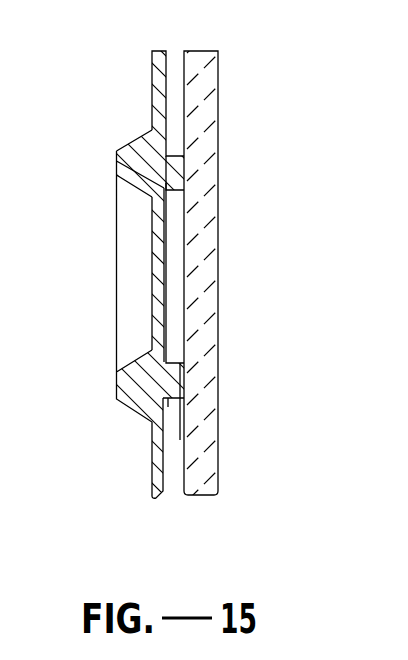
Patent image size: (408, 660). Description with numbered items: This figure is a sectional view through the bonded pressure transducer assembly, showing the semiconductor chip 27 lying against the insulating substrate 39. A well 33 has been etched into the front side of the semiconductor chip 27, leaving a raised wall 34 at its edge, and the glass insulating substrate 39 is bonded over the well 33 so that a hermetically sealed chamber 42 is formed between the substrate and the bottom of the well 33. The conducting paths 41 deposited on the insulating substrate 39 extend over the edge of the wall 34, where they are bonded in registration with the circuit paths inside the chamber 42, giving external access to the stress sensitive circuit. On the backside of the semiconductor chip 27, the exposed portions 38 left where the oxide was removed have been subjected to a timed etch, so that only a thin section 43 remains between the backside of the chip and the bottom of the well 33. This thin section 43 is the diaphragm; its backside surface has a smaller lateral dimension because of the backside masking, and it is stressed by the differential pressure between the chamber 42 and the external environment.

The semiconductor chip 27 is at (153, 51).
The well 33 is at (174, 364).
The wall 34 is at (172, 400).
The exposed portions 38 is at (116, 163).
The insulating substrate 39 is at (218, 83).
The conducting paths 41 is at (182, 440).
The hermetically sealed chamber 42 is at (173, 273).
The thin section 43 is at (152, 262).